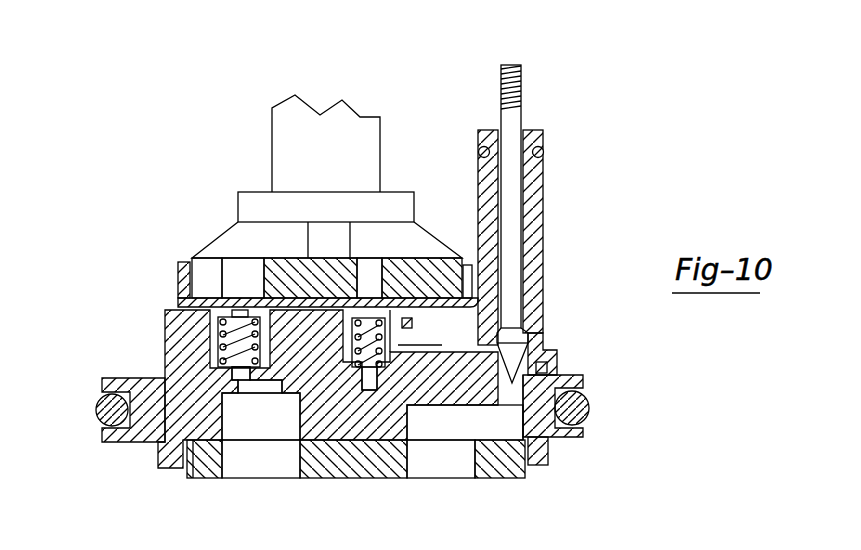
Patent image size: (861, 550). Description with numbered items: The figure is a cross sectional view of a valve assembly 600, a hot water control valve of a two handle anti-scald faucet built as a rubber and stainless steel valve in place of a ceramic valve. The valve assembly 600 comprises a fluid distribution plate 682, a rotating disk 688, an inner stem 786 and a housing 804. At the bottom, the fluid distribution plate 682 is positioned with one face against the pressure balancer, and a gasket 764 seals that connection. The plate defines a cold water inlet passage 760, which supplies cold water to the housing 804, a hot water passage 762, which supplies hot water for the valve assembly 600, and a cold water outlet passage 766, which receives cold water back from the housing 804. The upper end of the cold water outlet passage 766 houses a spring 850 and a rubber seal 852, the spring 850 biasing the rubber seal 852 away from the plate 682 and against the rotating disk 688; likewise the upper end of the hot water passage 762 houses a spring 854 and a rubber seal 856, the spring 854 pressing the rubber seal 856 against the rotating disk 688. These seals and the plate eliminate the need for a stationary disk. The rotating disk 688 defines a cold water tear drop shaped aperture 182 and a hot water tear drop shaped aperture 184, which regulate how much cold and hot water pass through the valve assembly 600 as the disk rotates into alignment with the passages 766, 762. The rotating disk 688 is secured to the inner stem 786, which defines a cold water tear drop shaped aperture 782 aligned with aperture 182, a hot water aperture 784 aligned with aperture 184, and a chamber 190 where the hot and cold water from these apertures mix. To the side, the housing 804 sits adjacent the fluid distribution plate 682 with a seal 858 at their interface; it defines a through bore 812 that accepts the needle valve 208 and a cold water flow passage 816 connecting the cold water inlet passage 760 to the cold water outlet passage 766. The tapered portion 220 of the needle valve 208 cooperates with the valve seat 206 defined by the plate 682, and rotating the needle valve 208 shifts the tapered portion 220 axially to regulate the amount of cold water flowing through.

The valve assembly 600 is at (297, 68).
The chamber 190 is at (288, 238).
The inner stem 786 is at (293, 141).
The cold water tear drop shaped aperture 782 is at (372, 273).
The cold water tear drop shaped aperture 182 is at (372, 275).
The hot water tear drop shaped aperture 184 is at (212, 285).
The hot water aperture 784 is at (238, 272).
The rotating disk 688 is at (183, 290).
The needle valve 208 is at (513, 112).
The through bore 812 is at (528, 168).
The housing 804 is at (533, 196).
The cold water outlet passage 766 is at (398, 367).
The rubber seal 856 is at (215, 312).
The spring 854 is at (237, 335).
The rubber seal 852 is at (370, 303).
The spring 850 is at (497, 345).
The tapered portion 220 is at (533, 352).
The seal 858 is at (552, 380).
The valve seat 206 is at (555, 387).
The cold water flow passage 816 is at (530, 408).
The fluid distribution plate 682 is at (148, 410).
The hot water passage 762 is at (277, 427).
The cold water inlet passage 760 is at (468, 432).
The gasket 764 is at (205, 475).